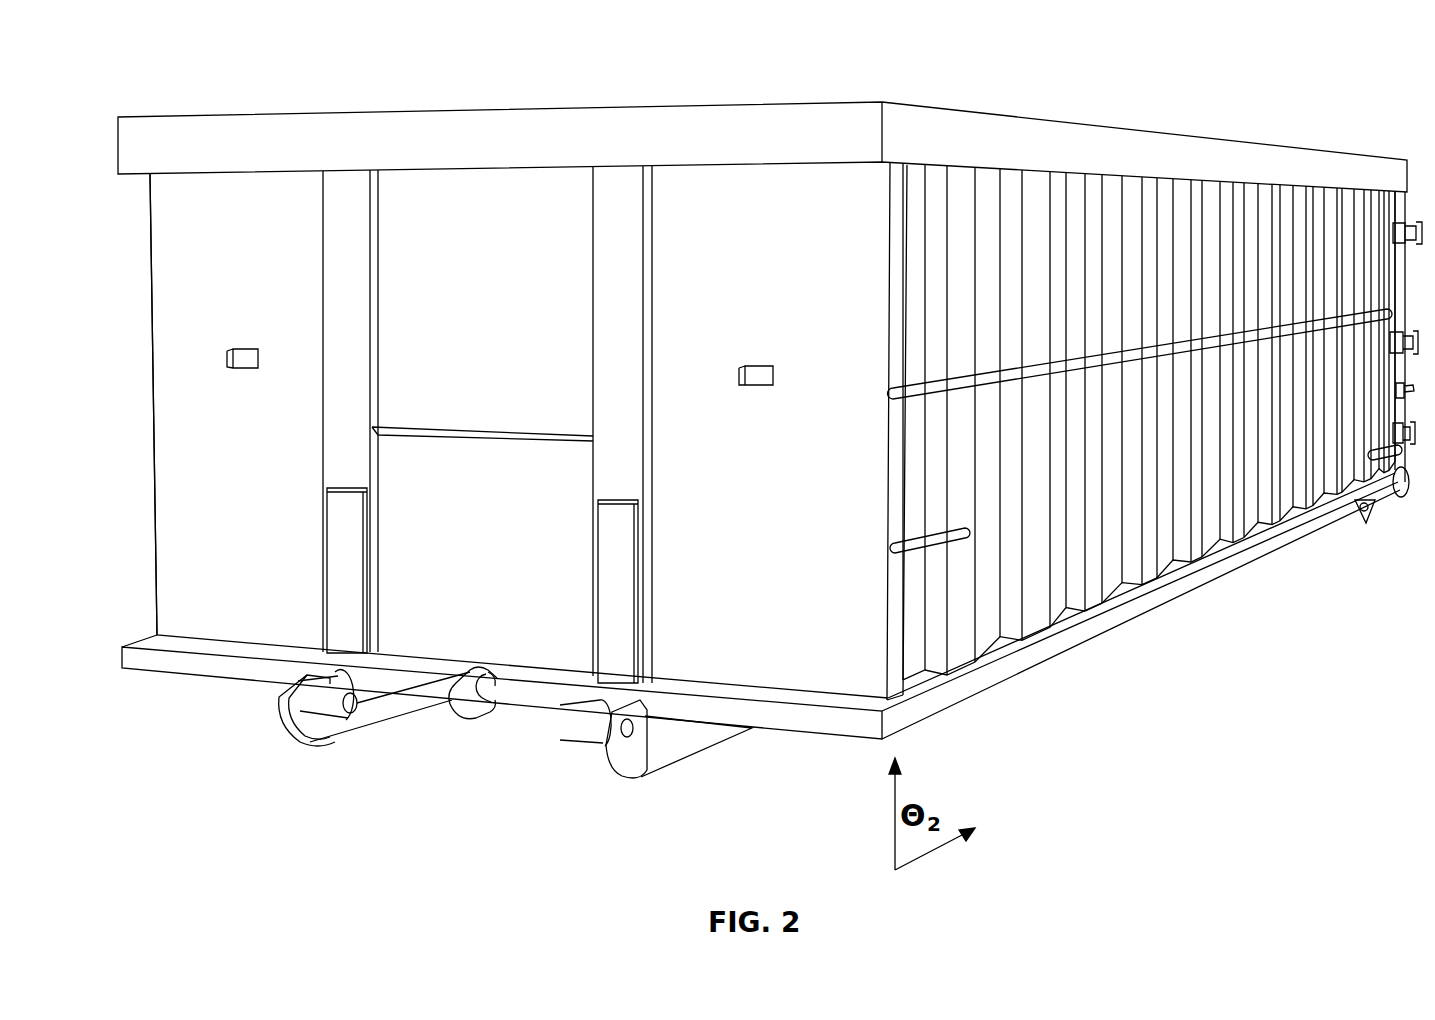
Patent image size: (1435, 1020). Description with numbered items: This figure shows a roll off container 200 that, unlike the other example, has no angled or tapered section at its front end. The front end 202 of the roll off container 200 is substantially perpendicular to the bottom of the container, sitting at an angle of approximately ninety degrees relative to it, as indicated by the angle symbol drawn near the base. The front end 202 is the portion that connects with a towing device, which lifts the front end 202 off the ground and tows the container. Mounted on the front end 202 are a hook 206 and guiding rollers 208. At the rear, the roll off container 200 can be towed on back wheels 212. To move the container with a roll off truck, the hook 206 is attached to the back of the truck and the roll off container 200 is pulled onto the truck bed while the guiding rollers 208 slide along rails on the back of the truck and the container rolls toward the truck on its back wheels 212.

The roll off container 200 is at (212, 52).
The front end 202 is at (158, 505).
The hook 206 is at (465, 708).
The guiding rollers 208 is at (583, 722).
The back wheels 212 is at (1366, 528).